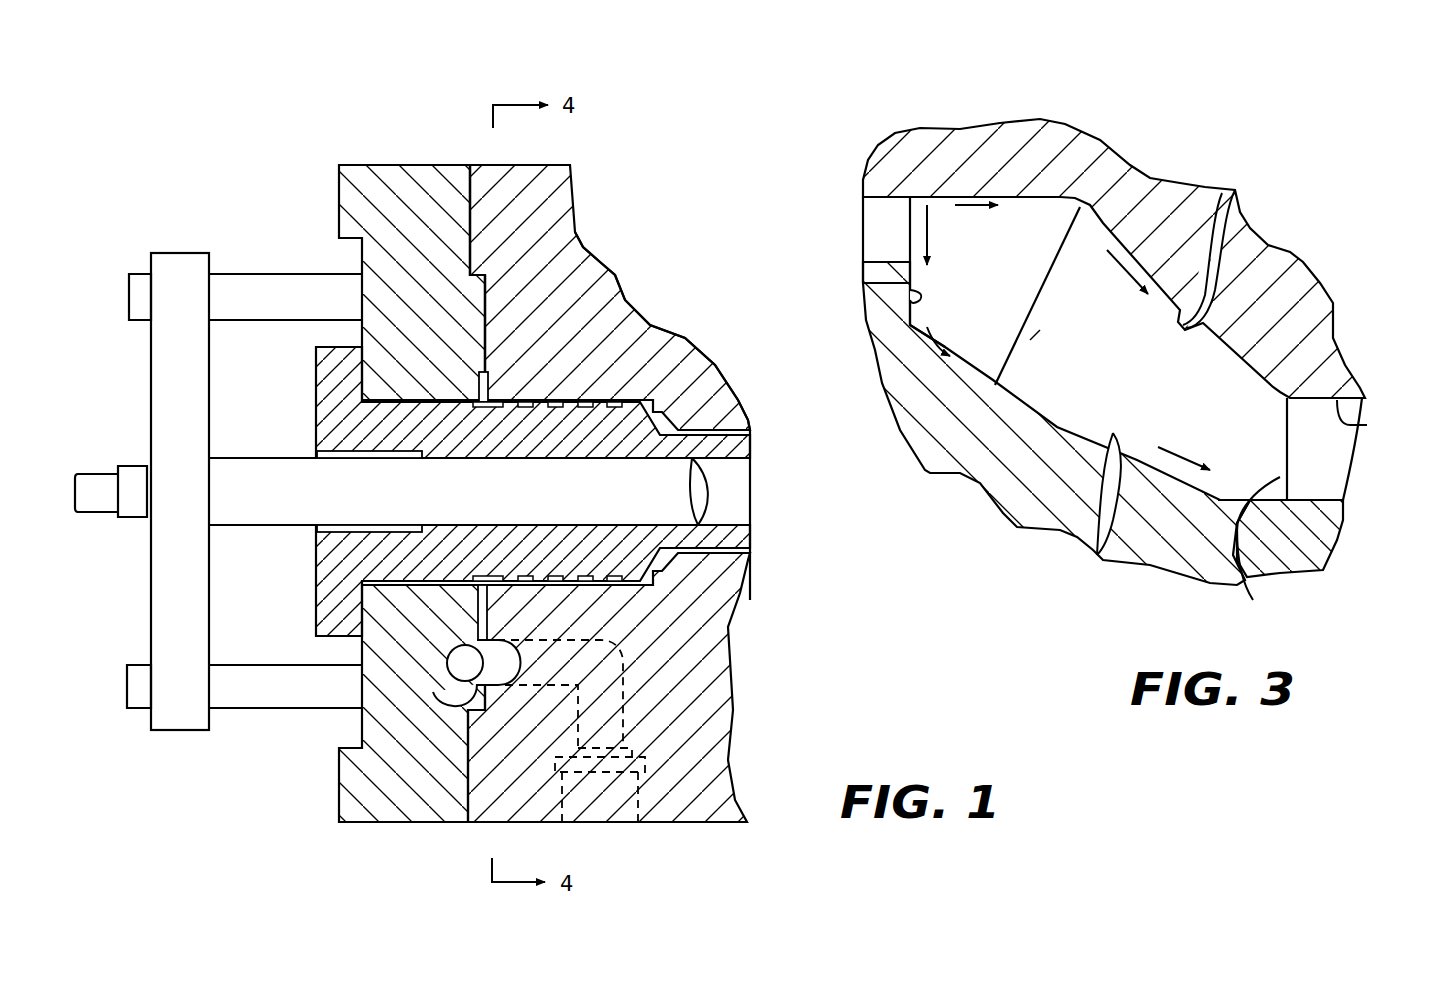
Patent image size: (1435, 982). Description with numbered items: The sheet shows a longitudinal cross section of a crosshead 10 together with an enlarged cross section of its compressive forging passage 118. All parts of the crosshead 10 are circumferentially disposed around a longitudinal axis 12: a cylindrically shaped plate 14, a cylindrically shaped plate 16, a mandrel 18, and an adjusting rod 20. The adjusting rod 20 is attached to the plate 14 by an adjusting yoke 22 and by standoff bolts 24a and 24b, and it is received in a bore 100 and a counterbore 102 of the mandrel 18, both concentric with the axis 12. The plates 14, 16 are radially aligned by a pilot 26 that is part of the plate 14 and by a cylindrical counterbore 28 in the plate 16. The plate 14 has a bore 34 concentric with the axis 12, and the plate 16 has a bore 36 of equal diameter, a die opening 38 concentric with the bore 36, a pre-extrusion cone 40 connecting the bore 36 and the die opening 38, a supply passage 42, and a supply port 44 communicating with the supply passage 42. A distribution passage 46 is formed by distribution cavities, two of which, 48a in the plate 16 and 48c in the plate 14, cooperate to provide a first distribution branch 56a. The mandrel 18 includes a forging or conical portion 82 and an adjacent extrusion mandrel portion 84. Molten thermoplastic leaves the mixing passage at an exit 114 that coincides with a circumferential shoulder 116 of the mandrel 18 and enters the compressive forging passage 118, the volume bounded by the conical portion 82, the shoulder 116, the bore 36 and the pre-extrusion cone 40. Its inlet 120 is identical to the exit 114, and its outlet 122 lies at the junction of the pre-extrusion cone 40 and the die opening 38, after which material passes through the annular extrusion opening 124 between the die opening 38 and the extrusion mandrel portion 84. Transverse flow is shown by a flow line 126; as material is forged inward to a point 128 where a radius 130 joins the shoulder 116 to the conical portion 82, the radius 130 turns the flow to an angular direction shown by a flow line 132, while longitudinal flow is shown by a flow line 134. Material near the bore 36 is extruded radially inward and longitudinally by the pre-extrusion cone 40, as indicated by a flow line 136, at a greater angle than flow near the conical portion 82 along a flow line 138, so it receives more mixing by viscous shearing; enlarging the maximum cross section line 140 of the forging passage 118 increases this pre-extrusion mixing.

In FIG. 1, the crosshead 10 is at (170, 156).
In FIG. 1, the longitudinal axis 12 is at (718, 497).
In FIG. 1, the plate 14 is at (417, 165).
In FIG. 1, the plate 16 is at (571, 165).
In FIG. 1, the mandrel 18 is at (316, 399).
In FIG. 3, the mandrel 18 is at (1170, 565).
In FIG. 1, the adjusting rod 20 is at (292, 458).
In FIG. 1, the adjusting yoke 22 is at (185, 253).
In FIG. 1, the standoff bolt 24a is at (282, 274).
In FIG. 1, the standoff bolt 24b is at (297, 708).
In FIG. 1, the pilot 26 is at (481, 275).
In FIG. 1, the counterbore 28 is at (472, 290).
In FIG. 1, the bore 34 is at (455, 402).
In FIG. 1, the bore 36 is at (580, 412).
In FIG. 3, the bore 36 is at (1025, 200).
In FIG. 1, the die opening 38 is at (745, 435).
In FIG. 3, the die opening 38 is at (1367, 423).
In FIG. 1, the pre-extrusion cone 40 is at (702, 412).
In FIG. 3, the pre-extrusion cone 40 is at (1222, 195).
In FIG. 1, the supply passage 42 is at (628, 680).
In FIG. 1, the supply port 44 is at (643, 795).
In FIG. 1, the distribution passage 46 is at (484, 676).
In FIG. 1, the distribution cavity 48a is at (502, 642).
In FIG. 1, the distribution cavity 48c is at (448, 688).
In FIG. 1, the first distribution branch 56a is at (468, 645).
In FIG. 3, the forging portion or conical portion 82 is at (1100, 555).
In FIG. 3, the extrusion mandrel portion 84 is at (1325, 497).
In FIG. 1, the bore 100 is at (540, 460).
In FIG. 1, the counterbore 102 is at (345, 458).
In FIG. 3, the exit 114 is at (925, 197).
In FIG. 3, the circumferential shoulder 116 is at (863, 283).
In FIG. 3, the compressive forging passage 118 is at (1093, 312).
In FIG. 3, the inlet 120 is at (908, 245).
In FIG. 3, the outlet 122 is at (1266, 547).
In FIG. 3, the annular extrusion opening 124 is at (1317, 447).
In FIG. 3, the flow line 126 is at (933, 238).
In FIG. 3, the point 128 is at (912, 297).
In FIG. 3, the radius 130 is at (920, 336).
In FIG. 3, the flow line 132 is at (962, 352).
In FIG. 3, the flow line 134 is at (980, 210).
In FIG. 3, the flow line 136 is at (1100, 290).
In FIG. 3, the flow line 138 is at (1175, 452).
In FIG. 3, the maximum cross section line 140 is at (1033, 338).